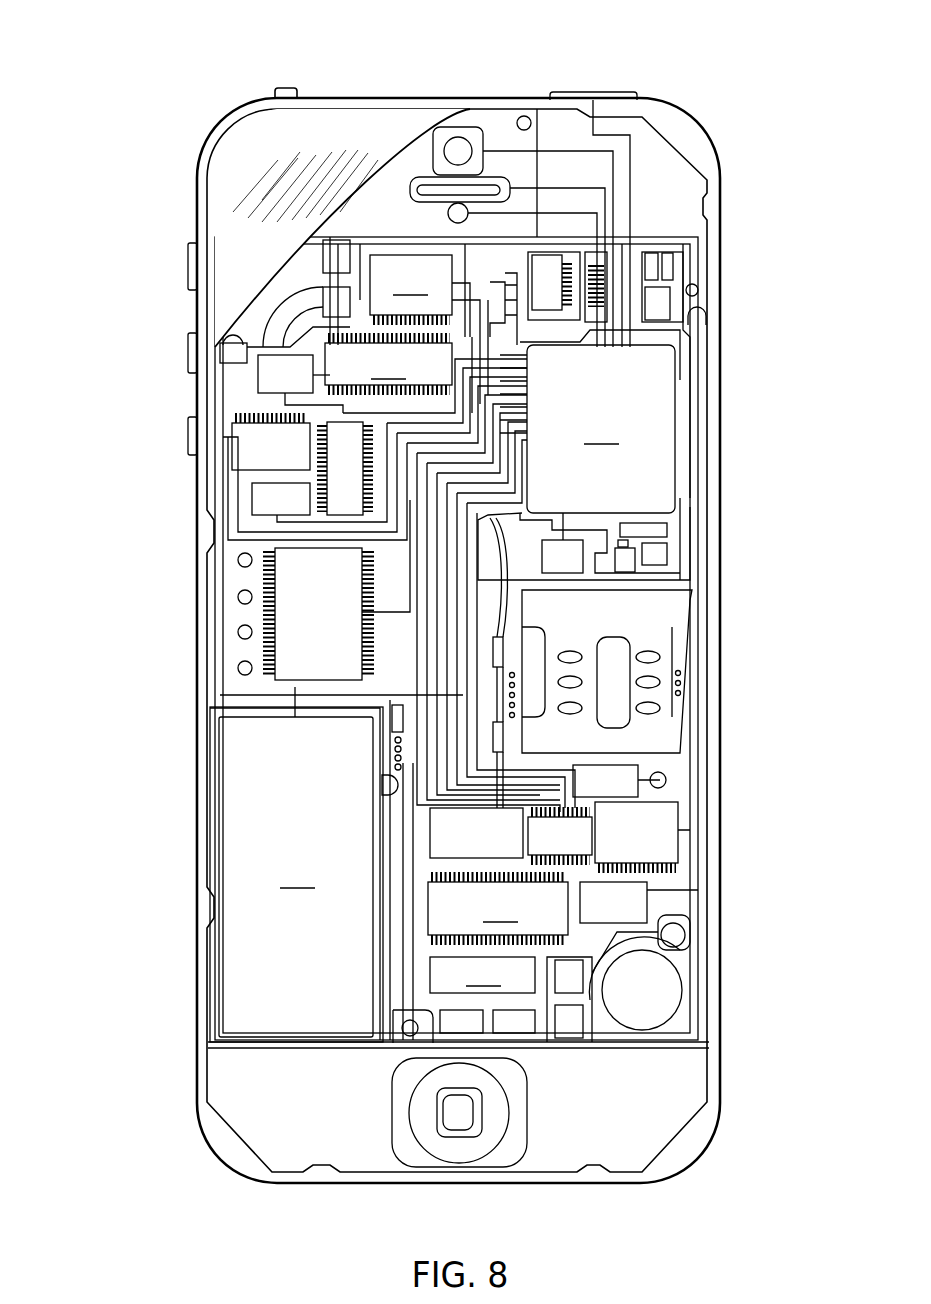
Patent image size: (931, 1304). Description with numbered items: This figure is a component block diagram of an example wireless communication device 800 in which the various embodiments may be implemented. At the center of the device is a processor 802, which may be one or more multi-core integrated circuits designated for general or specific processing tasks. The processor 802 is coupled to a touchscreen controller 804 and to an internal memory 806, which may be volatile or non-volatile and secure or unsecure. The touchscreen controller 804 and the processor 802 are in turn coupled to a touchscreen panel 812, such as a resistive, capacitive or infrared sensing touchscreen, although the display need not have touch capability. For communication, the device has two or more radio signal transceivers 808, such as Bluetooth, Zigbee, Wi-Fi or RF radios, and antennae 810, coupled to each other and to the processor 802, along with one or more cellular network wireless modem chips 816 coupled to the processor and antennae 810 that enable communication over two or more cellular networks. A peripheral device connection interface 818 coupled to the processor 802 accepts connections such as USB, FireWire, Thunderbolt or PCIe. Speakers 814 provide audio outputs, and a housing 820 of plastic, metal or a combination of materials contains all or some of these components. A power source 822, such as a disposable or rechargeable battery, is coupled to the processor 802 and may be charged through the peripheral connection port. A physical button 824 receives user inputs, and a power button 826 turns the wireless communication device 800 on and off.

The wireless communication device 800 is at (136, 86).
The processor 802 is at (584, 455).
The touchscreen controller 804 is at (425, 296).
The internal memory 806 is at (388, 364).
The radio signal transceivers 808 is at (620, 267).
The antennae 810 is at (672, 303).
The touchscreen panel 812 is at (237, 190).
The speakers 814 is at (413, 177).
The cellular network wireless modem chip 816 is at (498, 908).
The peripheral device connection interface 818 is at (482, 995).
The housing 820 is at (722, 1066).
The power source 822 is at (296, 874).
The physical button 824 is at (467, 1123).
The power button 826 is at (598, 100).